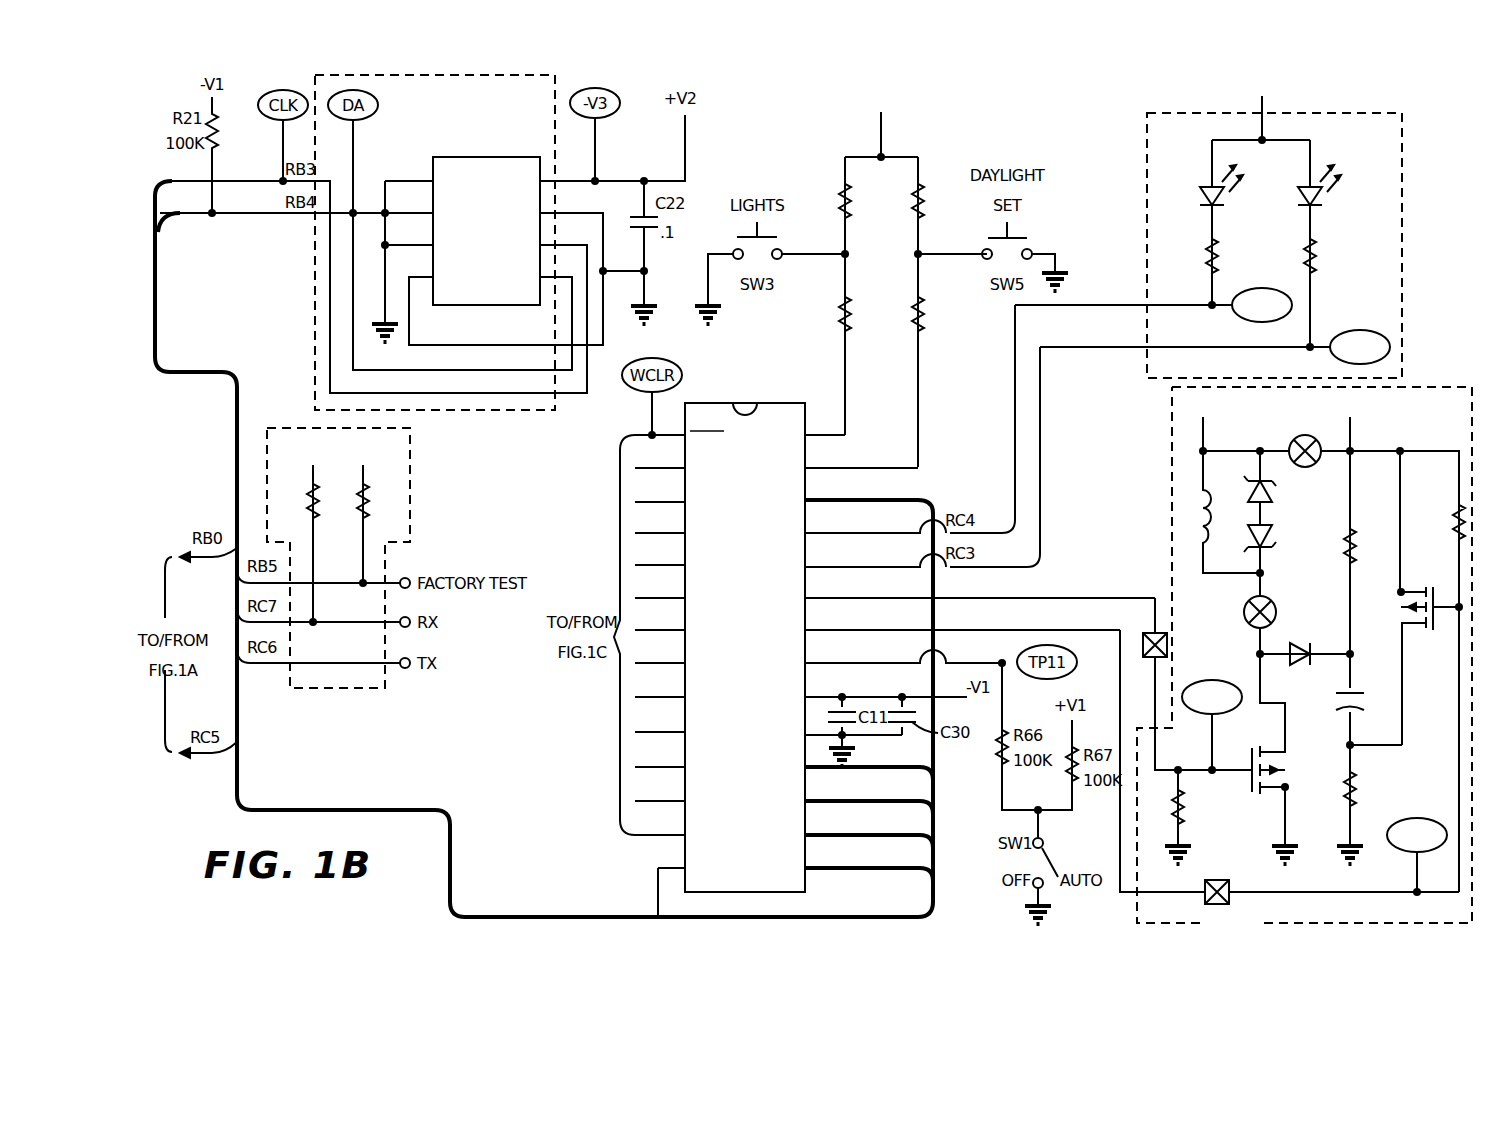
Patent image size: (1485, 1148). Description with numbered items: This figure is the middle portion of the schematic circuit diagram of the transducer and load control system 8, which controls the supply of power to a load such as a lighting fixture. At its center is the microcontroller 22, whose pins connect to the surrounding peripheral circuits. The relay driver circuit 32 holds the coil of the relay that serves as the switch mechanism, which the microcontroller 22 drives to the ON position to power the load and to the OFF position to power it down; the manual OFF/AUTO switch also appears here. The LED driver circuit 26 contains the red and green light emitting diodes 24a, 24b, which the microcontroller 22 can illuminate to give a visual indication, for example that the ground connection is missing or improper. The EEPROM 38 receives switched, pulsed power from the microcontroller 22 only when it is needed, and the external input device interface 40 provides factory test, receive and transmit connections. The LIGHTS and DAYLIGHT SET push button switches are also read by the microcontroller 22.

The transducer and load control system 8 is at (992, 141).
The microcontroller 22 is at (780, 403).
The light emitting diode 24a is at (1208, 185).
The light emitting diode 24b is at (1315, 183).
The LED driver circuit 26 is at (1240, 226).
The relay driver circuit 32 is at (1171, 452).
The EEPROM 38 is at (313, 289).
The external input device interface 40 is at (417, 499).